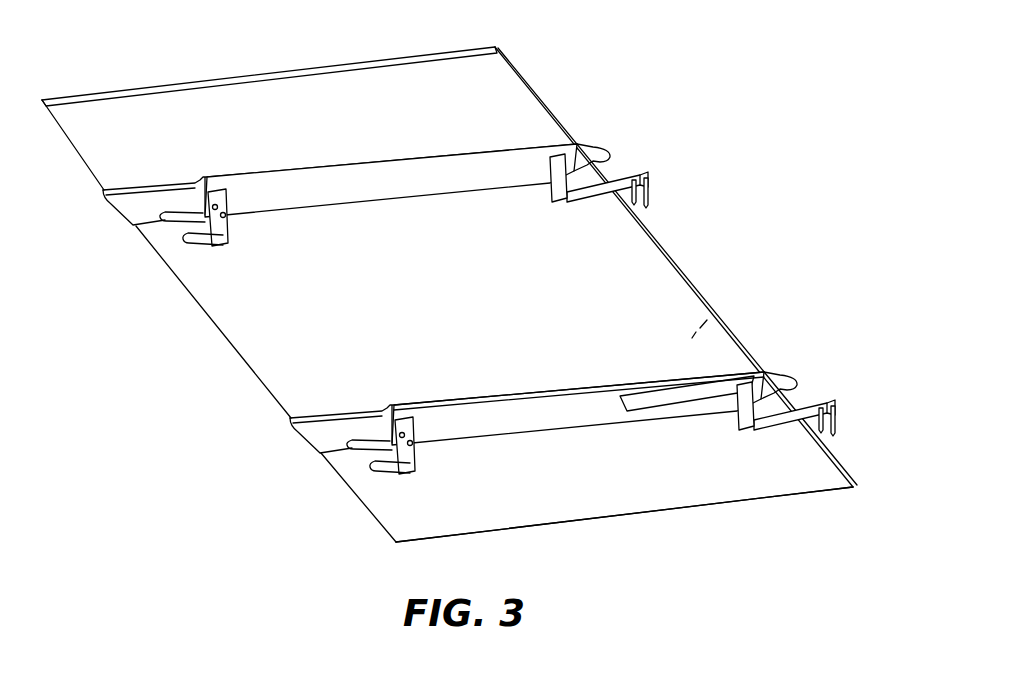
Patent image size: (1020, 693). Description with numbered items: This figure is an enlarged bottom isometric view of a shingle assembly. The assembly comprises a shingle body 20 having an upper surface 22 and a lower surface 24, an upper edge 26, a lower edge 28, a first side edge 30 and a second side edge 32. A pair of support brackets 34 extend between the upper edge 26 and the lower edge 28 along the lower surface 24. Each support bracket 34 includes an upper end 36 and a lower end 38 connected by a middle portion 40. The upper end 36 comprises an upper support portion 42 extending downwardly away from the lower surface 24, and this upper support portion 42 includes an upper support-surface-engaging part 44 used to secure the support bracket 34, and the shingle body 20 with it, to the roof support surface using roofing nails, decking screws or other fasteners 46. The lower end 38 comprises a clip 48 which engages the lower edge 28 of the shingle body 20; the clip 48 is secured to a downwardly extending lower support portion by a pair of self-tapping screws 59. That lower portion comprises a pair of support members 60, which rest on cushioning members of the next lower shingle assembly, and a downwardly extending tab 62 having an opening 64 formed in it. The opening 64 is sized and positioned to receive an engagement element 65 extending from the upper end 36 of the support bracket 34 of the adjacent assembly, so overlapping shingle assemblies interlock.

The shingle body 20 is at (536, 79).
The upper surface 22 is at (713, 314).
The lower surface 24 is at (636, 248).
The upper edge 26 is at (683, 275).
The lower edge 28 is at (256, 378).
The first side edge 30 is at (254, 73).
The second side edge 32 is at (600, 520).
The support bracket 34 is at (385, 147).
The upper end 36 is at (617, 137).
The lower end 38 is at (136, 232).
The middle portion 40 is at (347, 190).
The upper support portion 42 is at (675, 190).
The upper support-surface-engaging part 44 is at (623, 173).
The fasteners 46 is at (832, 428).
The clip 48 is at (133, 205).
The self-tapping screws 59 is at (420, 440).
The support members 60 is at (183, 222).
The downwardly extending tab 62 is at (413, 462).
The opening 64 is at (228, 238).
The engagement element 65 is at (792, 375).